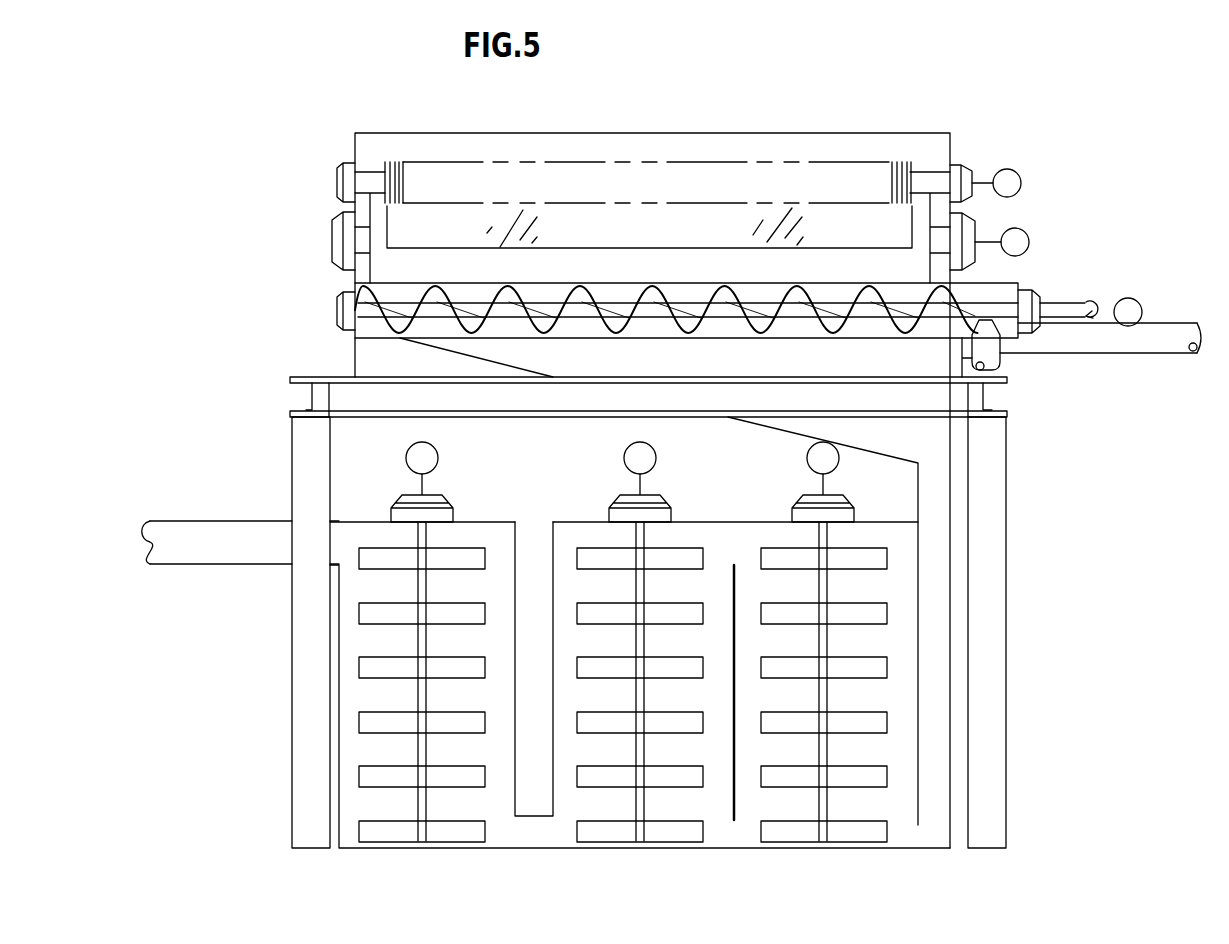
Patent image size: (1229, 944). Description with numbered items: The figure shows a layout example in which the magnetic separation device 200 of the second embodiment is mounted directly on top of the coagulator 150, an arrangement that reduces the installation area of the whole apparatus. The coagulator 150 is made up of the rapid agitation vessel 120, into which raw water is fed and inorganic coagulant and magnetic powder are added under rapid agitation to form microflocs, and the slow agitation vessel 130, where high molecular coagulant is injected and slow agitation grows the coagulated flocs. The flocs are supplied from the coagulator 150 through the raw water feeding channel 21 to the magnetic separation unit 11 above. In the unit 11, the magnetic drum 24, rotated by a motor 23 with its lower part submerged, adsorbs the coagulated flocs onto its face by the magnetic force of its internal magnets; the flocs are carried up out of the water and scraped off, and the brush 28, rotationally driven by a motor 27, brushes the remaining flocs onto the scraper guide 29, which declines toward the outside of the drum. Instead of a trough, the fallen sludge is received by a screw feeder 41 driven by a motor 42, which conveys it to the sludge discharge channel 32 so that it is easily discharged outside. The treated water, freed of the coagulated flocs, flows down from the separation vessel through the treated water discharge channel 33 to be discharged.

The magnetic separation device 200 is at (1116, 96).
The magnetic separation unit 11 is at (611, 101).
The scraper guide 29 is at (703, 223).
The brush 28 is at (802, 182).
The motor 27 is at (1009, 167).
The magnetic drum 24 is at (936, 206).
The motor 23 is at (1030, 238).
The screw feeder 41 is at (405, 297).
The motor 42 is at (1140, 300).
The sludge discharge channel 32 is at (1001, 357).
The treated water discharge channel 33 is at (1160, 357).
The raw water feeding channel 21 is at (1006, 553).
The coagulator 150 is at (248, 463).
The slow agitation vessel 130 is at (918, 643).
The rapid agitation vessel 120 is at (339, 705).